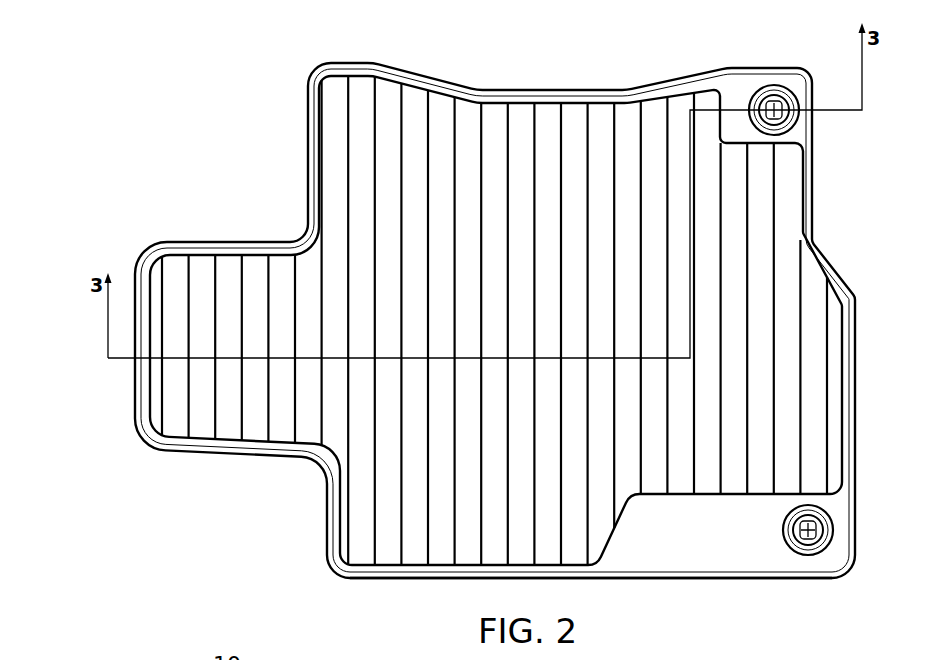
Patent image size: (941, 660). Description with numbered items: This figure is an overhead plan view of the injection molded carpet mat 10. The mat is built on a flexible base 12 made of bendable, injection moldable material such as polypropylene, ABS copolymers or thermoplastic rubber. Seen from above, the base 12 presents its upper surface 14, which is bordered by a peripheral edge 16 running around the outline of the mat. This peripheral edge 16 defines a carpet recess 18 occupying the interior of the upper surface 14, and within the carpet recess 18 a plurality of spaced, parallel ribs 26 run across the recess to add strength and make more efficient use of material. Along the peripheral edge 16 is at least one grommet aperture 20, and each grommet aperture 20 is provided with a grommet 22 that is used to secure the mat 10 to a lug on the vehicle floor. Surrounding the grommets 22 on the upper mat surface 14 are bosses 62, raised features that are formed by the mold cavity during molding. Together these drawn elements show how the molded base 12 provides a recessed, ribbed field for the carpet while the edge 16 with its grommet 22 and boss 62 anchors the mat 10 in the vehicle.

The injection molded carpet mat 10 is at (262, 207).
The flexible base 12 is at (672, 84).
The upper surface 14 is at (737, 563).
The peripheral edge 16 is at (845, 477).
The carpet recess 18 is at (787, 392).
The grommet aperture 20 is at (828, 530).
The grommet 22 is at (810, 548).
The ribs 26 is at (777, 234).
The bosses 62 is at (783, 93).